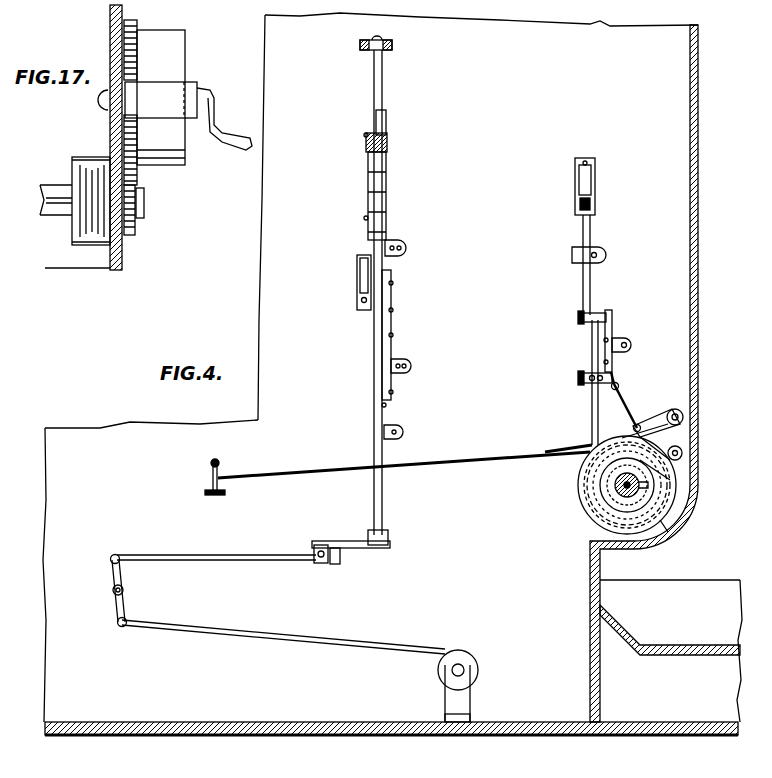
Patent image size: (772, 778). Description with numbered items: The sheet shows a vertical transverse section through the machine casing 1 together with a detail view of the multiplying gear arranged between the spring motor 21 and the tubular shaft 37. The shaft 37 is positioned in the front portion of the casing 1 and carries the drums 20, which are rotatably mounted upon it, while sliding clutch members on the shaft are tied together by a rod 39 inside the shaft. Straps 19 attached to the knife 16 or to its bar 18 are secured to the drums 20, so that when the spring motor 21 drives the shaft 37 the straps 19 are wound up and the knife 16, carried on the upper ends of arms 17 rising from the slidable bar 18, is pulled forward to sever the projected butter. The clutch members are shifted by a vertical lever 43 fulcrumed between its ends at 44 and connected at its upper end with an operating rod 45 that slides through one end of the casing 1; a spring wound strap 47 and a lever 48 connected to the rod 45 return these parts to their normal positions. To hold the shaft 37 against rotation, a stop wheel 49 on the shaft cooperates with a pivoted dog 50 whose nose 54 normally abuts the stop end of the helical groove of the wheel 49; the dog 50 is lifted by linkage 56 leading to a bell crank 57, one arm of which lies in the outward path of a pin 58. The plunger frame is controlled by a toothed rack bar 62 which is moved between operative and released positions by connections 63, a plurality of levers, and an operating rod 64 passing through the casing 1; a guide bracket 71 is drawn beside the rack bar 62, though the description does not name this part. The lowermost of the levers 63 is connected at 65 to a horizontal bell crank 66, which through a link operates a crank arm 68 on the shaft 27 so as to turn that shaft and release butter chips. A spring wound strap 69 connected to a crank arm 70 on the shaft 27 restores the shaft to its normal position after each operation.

In FIG. 17, the casing 1 is at (124, 18).
In FIG. 4, the casing 1 is at (698, 348).
In FIG. 17, the spring motor 21 is at (178, 60).
In FIG. 17, the tubular shaft 37 is at (52, 186).
In FIG. 4, the tubular shaft 37 is at (615, 488).
In FIG. 17, the stop wheel 49 is at (70, 240).
In FIG. 4, the stop wheel 49 is at (670, 478).
In FIG. 4, the toothed rack bar 62 is at (385, 183).
In FIG. 4, the guide bracket 71 is at (357, 292).
In FIG. 4, the connections (levers) 63 is at (378, 370).
In FIG. 4, the operating rod 64 is at (382, 410).
In FIG. 4, the connection 65 is at (388, 538).
In FIG. 4, the horizontal bell crank 66 is at (368, 552).
In FIG. 4, the crank arm 68 is at (112, 578).
In FIG. 4, the shaft 27 is at (112, 605).
In FIG. 4, the crank arm 70 is at (362, 640).
In FIG. 4, the spring wound strap 69 is at (458, 650).
In FIG. 4, the straps 19 is at (302, 480).
In FIG. 4, the knife (wire) 16 is at (219, 465).
In FIG. 4, the arms 17 is at (212, 478).
In FIG. 4, the bar 18 is at (206, 495).
In FIG. 4, the spring wound strap 47 is at (575, 206).
In FIG. 4, the lever 48 is at (582, 238).
In FIG. 4, the operating rod 45 is at (578, 318).
In FIG. 4, the vertical lever 43 is at (590, 428).
In FIG. 4, the pin 58 is at (608, 318).
In FIG. 4, the bell crank 57 is at (620, 335).
In FIG. 4, the fulcrum 44 is at (578, 379).
In FIG. 4, the linkage 56 is at (628, 400).
In FIG. 4, the pivoted dog 50 is at (672, 416).
In FIG. 4, the nose 54 is at (682, 452).
In FIG. 4, the rod 39 is at (600, 482).
In FIG. 4, the drums 20 is at (690, 500).